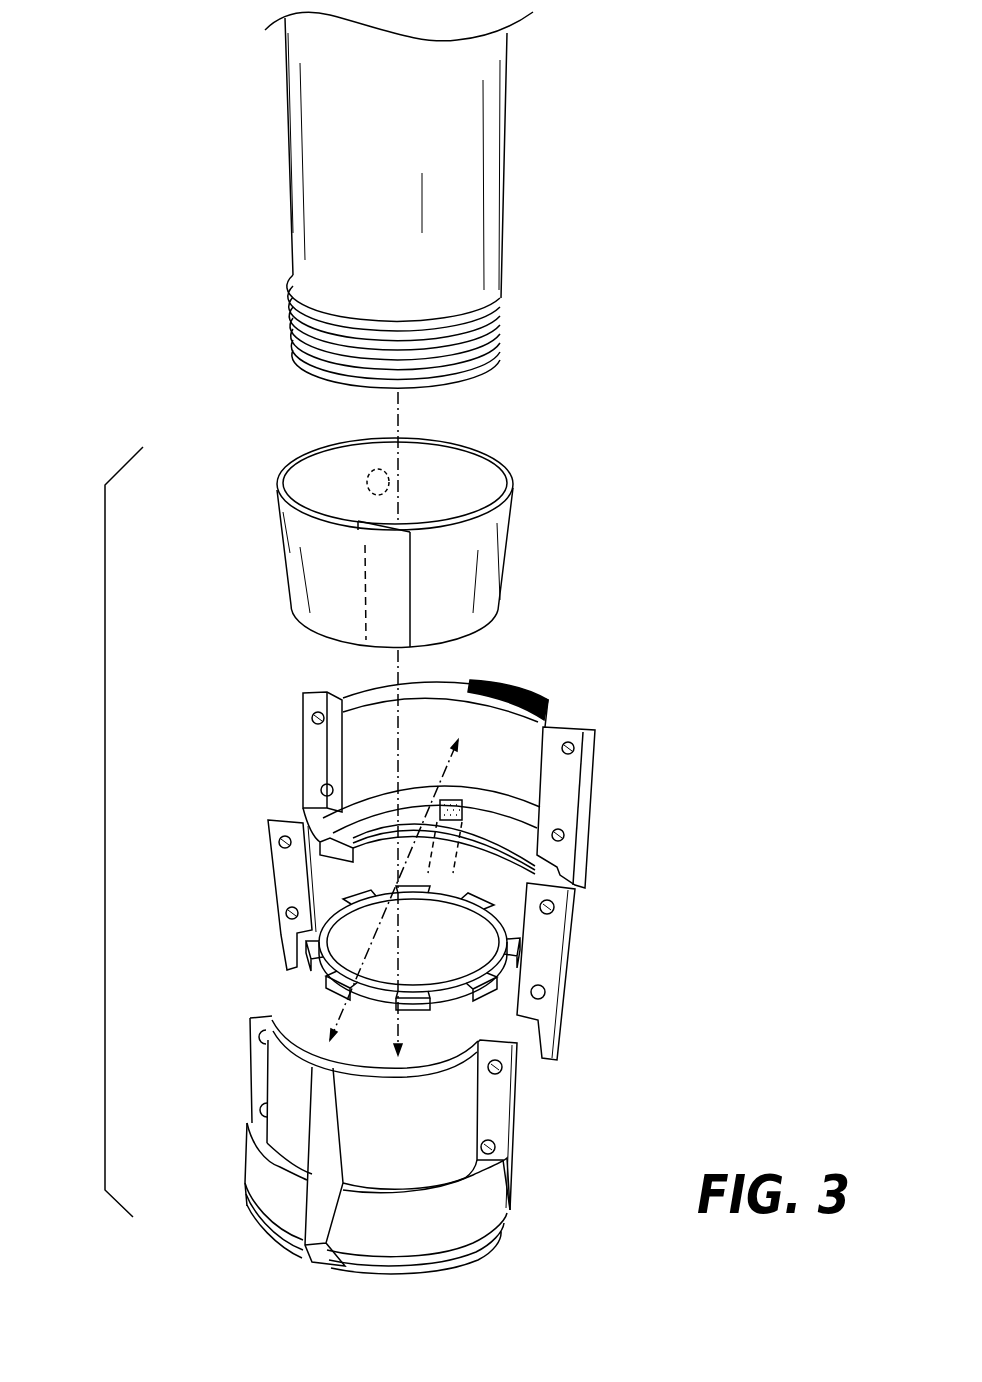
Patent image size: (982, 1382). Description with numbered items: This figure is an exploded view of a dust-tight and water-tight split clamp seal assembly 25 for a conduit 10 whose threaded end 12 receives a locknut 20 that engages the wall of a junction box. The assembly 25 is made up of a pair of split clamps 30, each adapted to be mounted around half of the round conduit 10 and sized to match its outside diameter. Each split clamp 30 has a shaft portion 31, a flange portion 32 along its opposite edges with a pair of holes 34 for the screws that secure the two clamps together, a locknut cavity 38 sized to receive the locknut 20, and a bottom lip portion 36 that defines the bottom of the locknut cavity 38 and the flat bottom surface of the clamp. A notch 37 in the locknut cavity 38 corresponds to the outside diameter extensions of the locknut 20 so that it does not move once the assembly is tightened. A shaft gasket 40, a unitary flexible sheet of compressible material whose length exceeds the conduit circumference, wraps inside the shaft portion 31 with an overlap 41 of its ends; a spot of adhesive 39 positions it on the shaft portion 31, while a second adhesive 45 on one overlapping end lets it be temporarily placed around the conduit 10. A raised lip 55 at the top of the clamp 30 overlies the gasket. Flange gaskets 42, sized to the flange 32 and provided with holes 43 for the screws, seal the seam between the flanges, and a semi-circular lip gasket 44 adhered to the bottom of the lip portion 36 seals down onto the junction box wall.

The conduit 10 is at (463, 170).
The threaded end 12 is at (467, 333).
The locknut 20 is at (463, 897).
The split clamp seal assembly 25 is at (103, 840).
The split clamp 30 is at (546, 699).
The shaft portion 31 is at (498, 724).
The flange portion 32 is at (310, 750).
The flange hole 34 is at (316, 718).
The lip portion 36 is at (440, 804).
The notch 37 is at (463, 804).
The locknut cavity 38 is at (267, 1200).
The spot of adhesive 39 is at (373, 468).
The shaft gasket 40 is at (490, 523).
The overlap 41 is at (358, 521).
The flange gasket 42 is at (280, 857).
The flange gasket hole 43 is at (284, 842).
The lip gasket 44 is at (318, 864).
The second adhesive 45 is at (387, 590).
The raised lip 55 is at (472, 688).